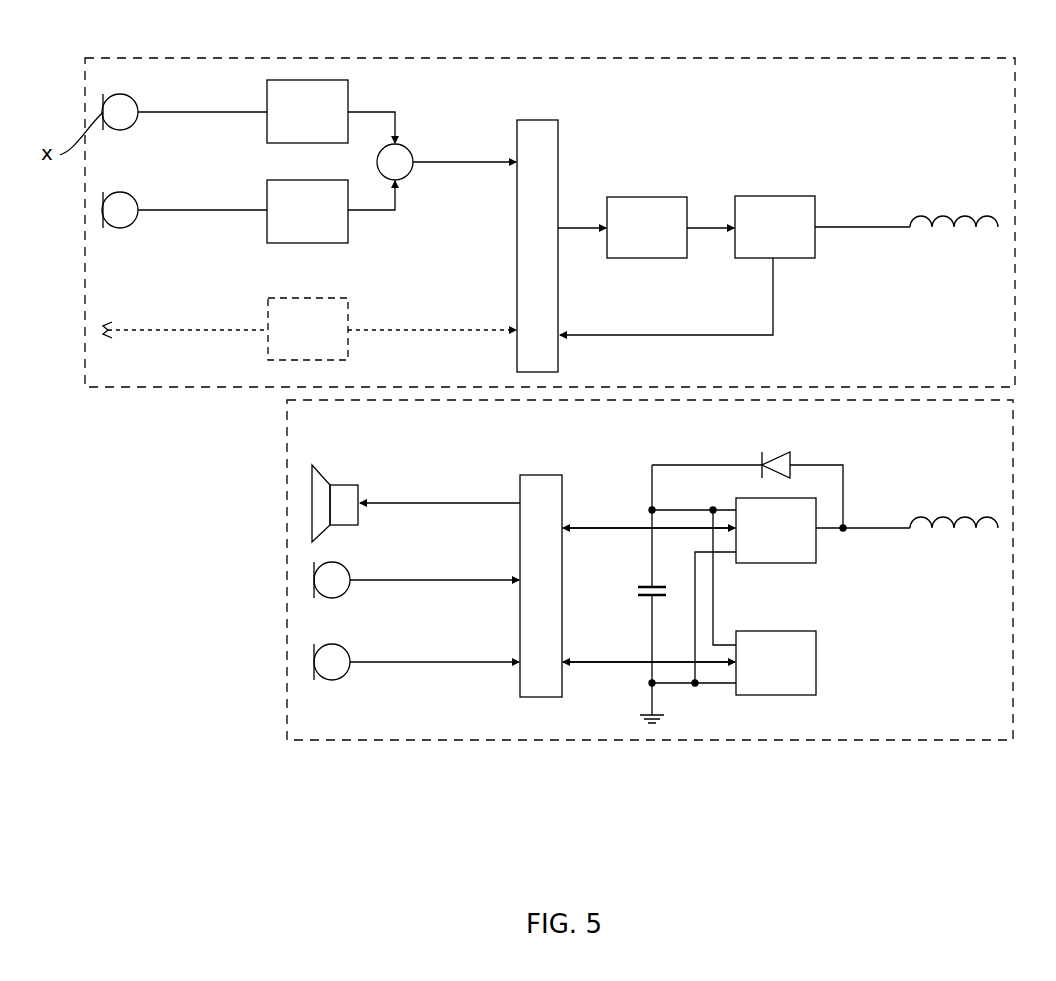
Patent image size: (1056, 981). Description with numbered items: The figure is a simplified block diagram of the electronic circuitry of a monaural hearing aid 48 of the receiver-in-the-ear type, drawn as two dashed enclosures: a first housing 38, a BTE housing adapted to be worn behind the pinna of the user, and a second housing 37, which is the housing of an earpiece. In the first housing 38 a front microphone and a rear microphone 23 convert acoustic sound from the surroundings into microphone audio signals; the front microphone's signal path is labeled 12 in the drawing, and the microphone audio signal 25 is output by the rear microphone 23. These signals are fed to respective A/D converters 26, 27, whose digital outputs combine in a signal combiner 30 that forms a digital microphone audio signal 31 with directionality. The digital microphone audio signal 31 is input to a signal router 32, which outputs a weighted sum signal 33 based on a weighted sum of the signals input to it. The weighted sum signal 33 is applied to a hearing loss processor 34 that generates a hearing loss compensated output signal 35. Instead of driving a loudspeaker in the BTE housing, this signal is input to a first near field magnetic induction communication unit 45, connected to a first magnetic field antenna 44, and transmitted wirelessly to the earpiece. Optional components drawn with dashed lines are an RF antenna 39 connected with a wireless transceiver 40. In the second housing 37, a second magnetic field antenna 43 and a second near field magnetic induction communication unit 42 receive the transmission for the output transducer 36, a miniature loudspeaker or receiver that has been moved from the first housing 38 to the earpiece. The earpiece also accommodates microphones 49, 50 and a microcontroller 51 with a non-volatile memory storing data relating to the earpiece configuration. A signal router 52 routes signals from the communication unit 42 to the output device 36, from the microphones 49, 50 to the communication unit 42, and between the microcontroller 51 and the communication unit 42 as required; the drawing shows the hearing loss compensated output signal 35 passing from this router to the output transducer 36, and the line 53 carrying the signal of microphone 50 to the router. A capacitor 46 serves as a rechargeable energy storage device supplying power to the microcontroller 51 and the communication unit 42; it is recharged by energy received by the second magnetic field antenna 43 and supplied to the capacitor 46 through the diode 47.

The first microphone signal line 12 is at (185, 112).
The rear microphone 23 is at (138, 195).
The microphone audio signal 25 is at (200, 210).
The A/D converter 26 is at (310, 80).
The A/D converter 27 is at (280, 243).
The signal combiner 30 is at (410, 150).
The digital microphone audio signal 31 is at (477, 163).
The signal router 32 is at (545, 120).
The weighted sum signal 33 is at (565, 228).
The hearing loss processor 34 is at (650, 197).
The hearing loss compensated output signal 35 is at (718, 228).
The output transducer 36 is at (358, 482).
The second housing 37 is at (287, 465).
The first housing 38 is at (165, 387).
The RF antenna 39 is at (118, 328).
The wireless transceiver 40 is at (348, 310).
The second near field magnetic induction communication unit 42 is at (790, 563).
The second magnetic field antenna 43 is at (935, 518).
The first magnetic field antenna 44 is at (935, 218).
The first near field magnetic induction communication unit 45 is at (780, 196).
The capacitor 46 is at (645, 597).
The diode 47 is at (792, 452).
The hearing device 48 is at (140, 600).
The microphone 49 is at (312, 582).
The microphone 50 is at (350, 650).
The microcontroller 51 is at (816, 648).
The signal router 52 is at (540, 475).
The microphone signal line 53 is at (425, 662).